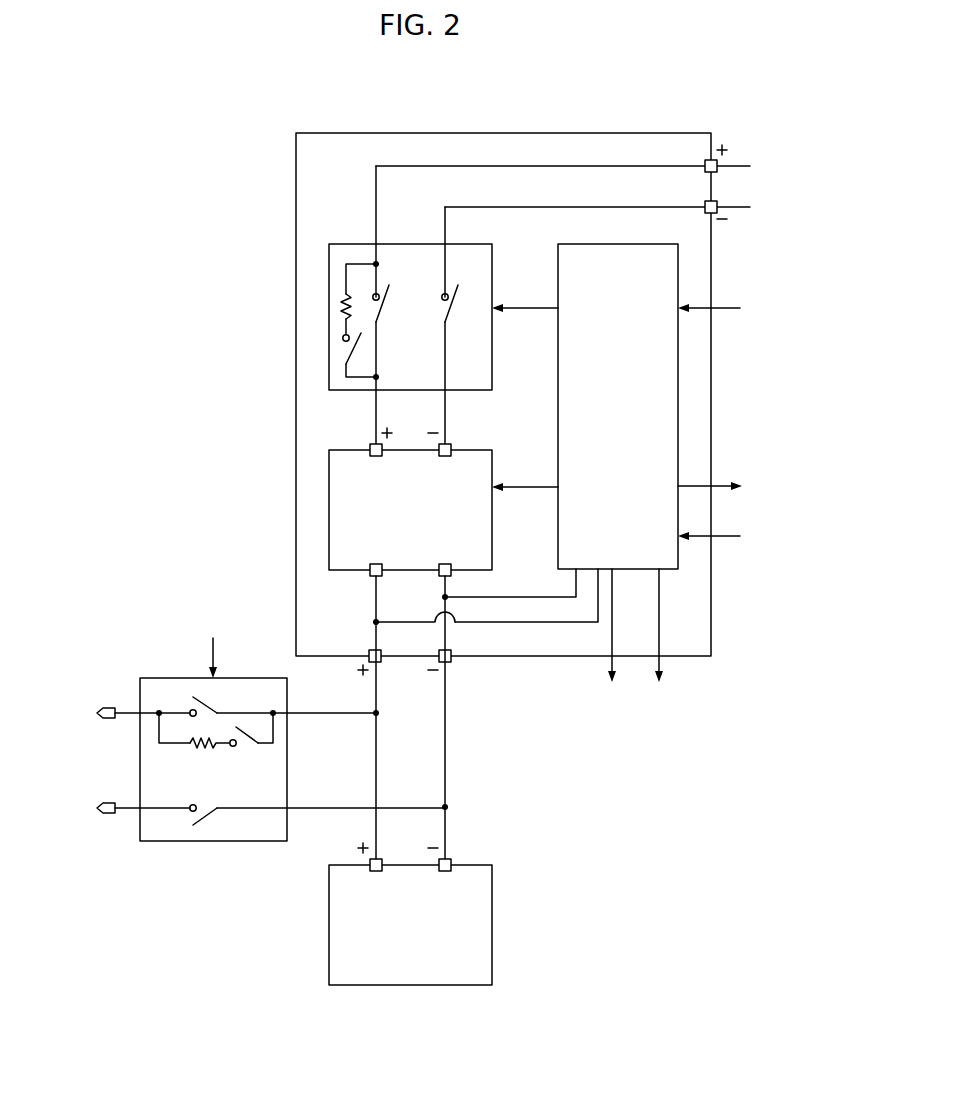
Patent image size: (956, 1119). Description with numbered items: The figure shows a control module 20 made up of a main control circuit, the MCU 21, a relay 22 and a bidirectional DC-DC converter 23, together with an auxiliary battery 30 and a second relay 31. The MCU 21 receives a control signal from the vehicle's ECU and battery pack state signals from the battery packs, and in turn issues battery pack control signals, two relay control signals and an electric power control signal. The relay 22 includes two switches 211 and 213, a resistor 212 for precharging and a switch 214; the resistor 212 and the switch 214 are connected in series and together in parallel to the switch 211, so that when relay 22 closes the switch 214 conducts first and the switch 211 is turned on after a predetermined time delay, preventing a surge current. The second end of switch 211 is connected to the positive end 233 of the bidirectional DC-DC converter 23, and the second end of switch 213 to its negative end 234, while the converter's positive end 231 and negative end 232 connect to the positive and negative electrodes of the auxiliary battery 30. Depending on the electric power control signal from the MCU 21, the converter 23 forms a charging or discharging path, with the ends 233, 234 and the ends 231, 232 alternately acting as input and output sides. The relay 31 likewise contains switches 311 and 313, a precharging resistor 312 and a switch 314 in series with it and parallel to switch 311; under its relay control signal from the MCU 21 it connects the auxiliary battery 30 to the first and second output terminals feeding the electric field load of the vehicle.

The control module 20 is at (492, 132).
The main control circuit (MCU) 21 is at (678, 402).
The relay 22 is at (372, 324).
The bidirectional DC-DC converter 23 is at (389, 505).
The auxiliary battery 30 is at (492, 921).
The relay 31 is at (245, 751).
The switch 211 is at (394, 350).
The resistor for precharging 212 is at (340, 308).
The switch 213 is at (463, 350).
The switch 214 is at (342, 352).
The positive end 231 is at (370, 576).
The negative end 232 is at (455, 574).
The positive end 233 is at (371, 445).
The negative end 234 is at (449, 445).
The switch 311 is at (189, 696).
The resistor for precharging 312 is at (204, 750).
The switch 313 is at (190, 823).
The switch 314 is at (246, 750).